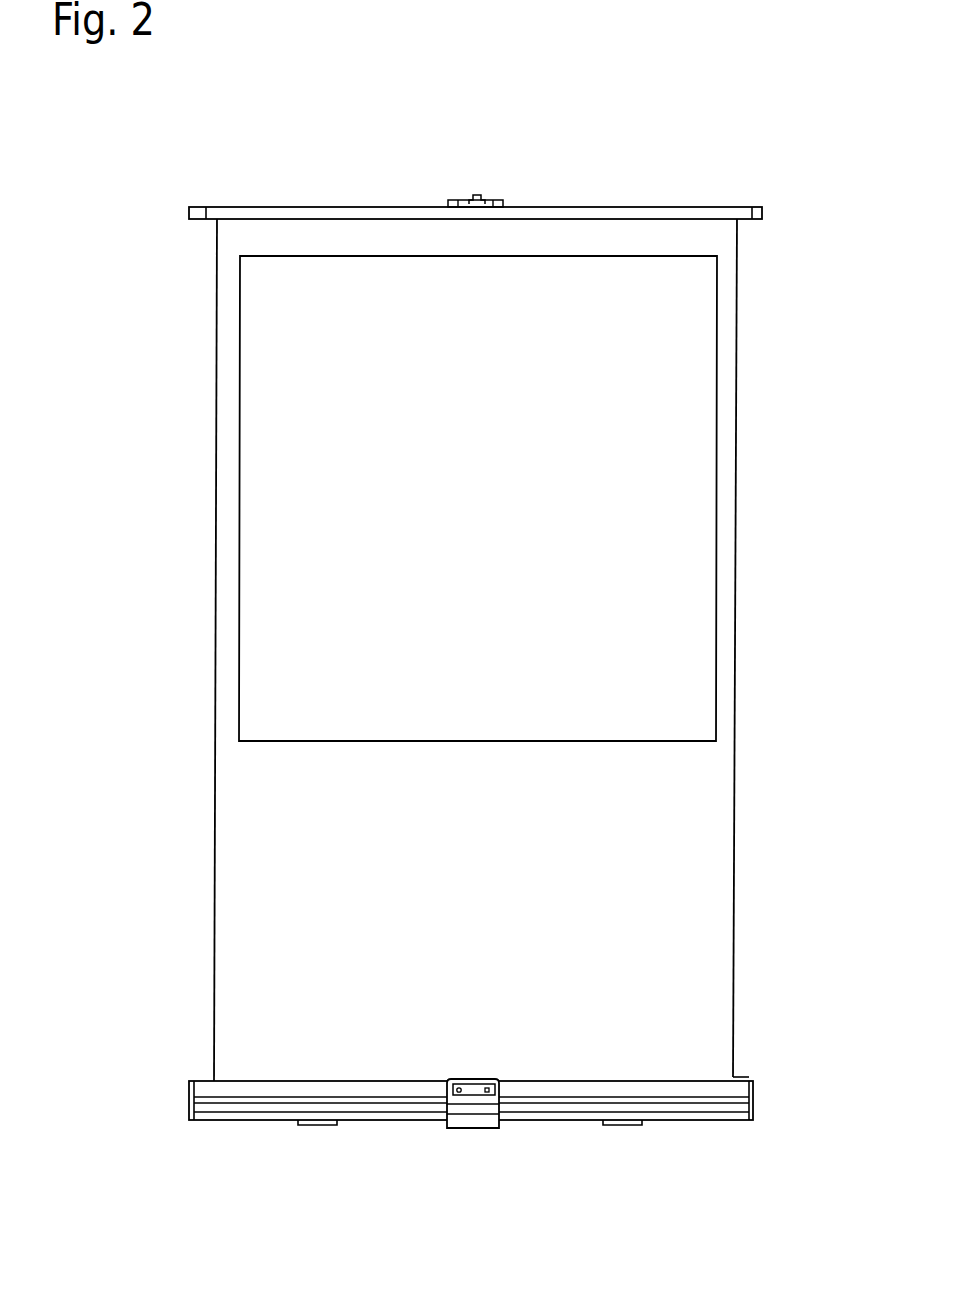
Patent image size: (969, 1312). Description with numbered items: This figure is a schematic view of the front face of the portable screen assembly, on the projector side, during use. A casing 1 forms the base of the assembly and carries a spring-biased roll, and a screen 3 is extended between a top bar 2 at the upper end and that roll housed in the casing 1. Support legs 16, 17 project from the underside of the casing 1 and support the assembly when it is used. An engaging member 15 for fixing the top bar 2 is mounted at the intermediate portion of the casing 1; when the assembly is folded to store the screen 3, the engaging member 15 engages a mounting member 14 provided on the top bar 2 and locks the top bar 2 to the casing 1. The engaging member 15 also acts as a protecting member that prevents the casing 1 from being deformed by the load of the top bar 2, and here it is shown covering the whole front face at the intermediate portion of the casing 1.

The casing 1 is at (742, 1092).
The top bar 2 is at (697, 211).
The screen 3 is at (728, 380).
The mounting member 14 is at (493, 201).
The engaging member 15 is at (470, 1130).
The support leg 16 is at (622, 1127).
The support leg 17 is at (314, 1127).